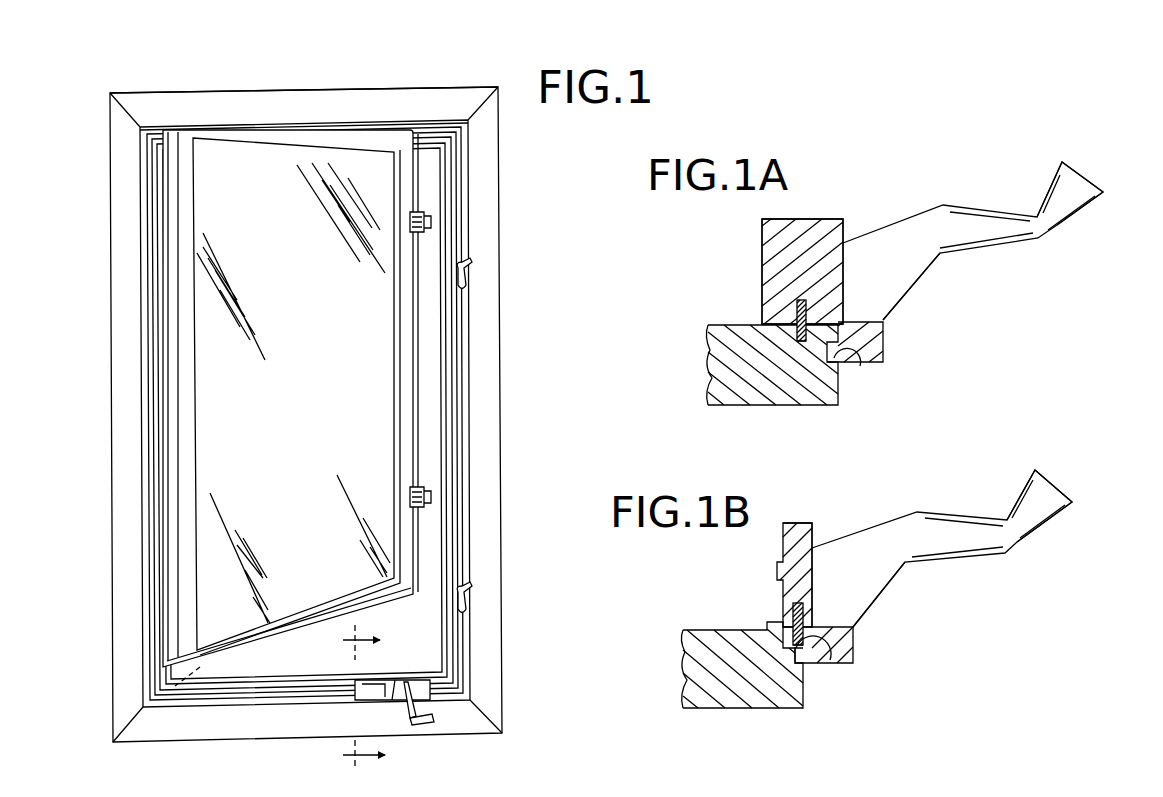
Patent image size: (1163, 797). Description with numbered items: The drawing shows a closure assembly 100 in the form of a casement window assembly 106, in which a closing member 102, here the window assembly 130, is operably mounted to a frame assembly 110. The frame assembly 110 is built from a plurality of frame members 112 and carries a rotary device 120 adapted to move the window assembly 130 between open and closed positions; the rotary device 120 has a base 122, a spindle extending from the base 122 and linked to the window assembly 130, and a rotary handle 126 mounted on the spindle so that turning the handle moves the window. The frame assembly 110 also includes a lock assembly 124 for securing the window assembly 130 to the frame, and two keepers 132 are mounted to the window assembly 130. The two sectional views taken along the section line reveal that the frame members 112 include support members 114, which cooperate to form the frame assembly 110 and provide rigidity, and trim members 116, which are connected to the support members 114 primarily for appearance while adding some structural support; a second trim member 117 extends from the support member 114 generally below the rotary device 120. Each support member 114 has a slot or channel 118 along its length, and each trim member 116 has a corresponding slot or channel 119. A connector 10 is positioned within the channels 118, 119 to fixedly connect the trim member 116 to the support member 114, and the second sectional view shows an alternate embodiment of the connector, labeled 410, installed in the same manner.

In FIG. 1, the closure assembly 100 is at (100, 90).
In FIG. 1, the closing member 102 is at (252, 170).
In FIG. 1, the casement window assembly 106 is at (158, 112).
In FIG. 1, the frame assembly 110 is at (437, 105).
In FIG. 1, the frame members 112 is at (190, 113).
In FIG. 1A, the frame members 112 is at (735, 335).
In FIG. 1B, the frame members 112 is at (790, 548).
In FIG. 1A, the support member 114 is at (728, 363).
In FIG. 1B, the support member 114 is at (697, 667).
In FIG. 1A, the trim member 116 is at (800, 228).
In FIG. 1B, the trim member 116 is at (797, 530).
In FIG. 1A, the second trim member 117 is at (883, 345).
In FIG. 1B, the second trim member 117 is at (845, 642).
In FIG. 1A, the slot or channel of the support member 118 is at (803, 345).
In FIG. 1B, the slot or channel of the support member 118 is at (798, 648).
In FIG. 1A, the slot or channel of the trim member 119 is at (808, 297).
In FIG. 1B, the slot or channel of the trim member 119 is at (803, 598).
In FIG. 1A, the connector 10 is at (860, 366).
In FIG. 1B, the fastener 410 is at (830, 660).
In FIG. 1, the rotary device 120 is at (437, 694).
In FIG. 1A, the rotary device 120 is at (941, 198).
In FIG. 1B, the rotary device 120 is at (900, 505).
In FIG. 1, the base 122 is at (357, 692).
In FIG. 1A, the base 122 is at (905, 285).
In FIG. 1B, the base 122 is at (867, 605).
In FIG. 1, the lock assembly 124 is at (475, 260).
In FIG. 1, the rotary handle 126 is at (437, 717).
In FIG. 1A, the rotary handle 126 is at (1080, 175).
In FIG. 1B, the rotary handle 126 is at (1043, 490).
In FIG. 1, the window assembly 130 is at (352, 173).
In FIG. 1, the keepers 132 is at (432, 222).